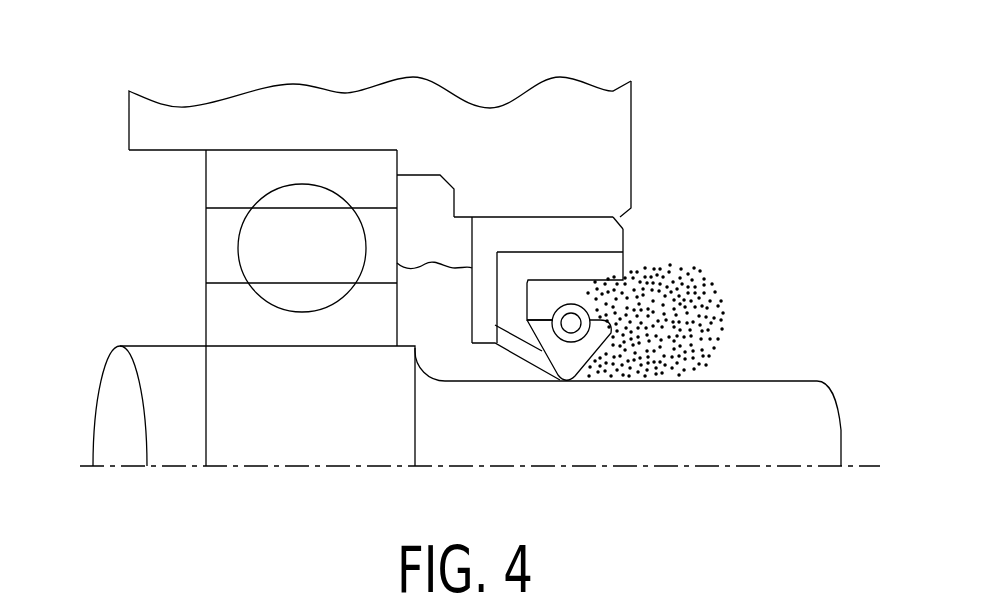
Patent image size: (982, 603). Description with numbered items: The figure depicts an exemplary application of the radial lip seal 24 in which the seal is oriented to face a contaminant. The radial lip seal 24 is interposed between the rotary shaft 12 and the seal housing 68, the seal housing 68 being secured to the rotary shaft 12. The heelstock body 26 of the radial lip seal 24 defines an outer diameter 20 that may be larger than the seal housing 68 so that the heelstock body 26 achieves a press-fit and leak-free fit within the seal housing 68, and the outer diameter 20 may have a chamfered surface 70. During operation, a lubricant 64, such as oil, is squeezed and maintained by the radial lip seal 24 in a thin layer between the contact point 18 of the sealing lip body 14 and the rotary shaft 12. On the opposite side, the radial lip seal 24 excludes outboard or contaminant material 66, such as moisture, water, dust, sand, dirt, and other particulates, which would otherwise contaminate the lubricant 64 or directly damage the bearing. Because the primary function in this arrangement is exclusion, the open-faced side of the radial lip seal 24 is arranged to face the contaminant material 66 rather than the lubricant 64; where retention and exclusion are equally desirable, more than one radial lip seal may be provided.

The rotary shaft 12 is at (499, 438).
The sealing lip body 14 is at (530, 333).
The contact point 18 is at (573, 381).
The outer diameter 20 is at (567, 217).
The radial lip seal 24 is at (603, 240).
The heelstock body 26 is at (483, 295).
The lubricant 64 is at (433, 296).
The contaminant material 66 is at (717, 327).
The seal housing 68 is at (330, 110).
The chamfered surface 70 is at (623, 223).